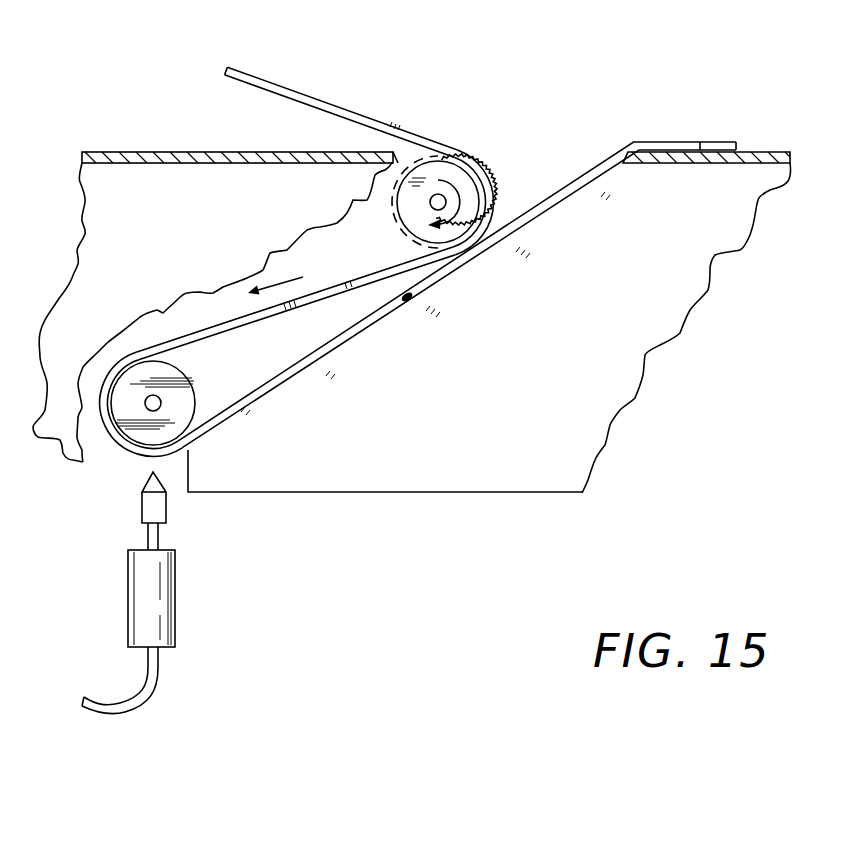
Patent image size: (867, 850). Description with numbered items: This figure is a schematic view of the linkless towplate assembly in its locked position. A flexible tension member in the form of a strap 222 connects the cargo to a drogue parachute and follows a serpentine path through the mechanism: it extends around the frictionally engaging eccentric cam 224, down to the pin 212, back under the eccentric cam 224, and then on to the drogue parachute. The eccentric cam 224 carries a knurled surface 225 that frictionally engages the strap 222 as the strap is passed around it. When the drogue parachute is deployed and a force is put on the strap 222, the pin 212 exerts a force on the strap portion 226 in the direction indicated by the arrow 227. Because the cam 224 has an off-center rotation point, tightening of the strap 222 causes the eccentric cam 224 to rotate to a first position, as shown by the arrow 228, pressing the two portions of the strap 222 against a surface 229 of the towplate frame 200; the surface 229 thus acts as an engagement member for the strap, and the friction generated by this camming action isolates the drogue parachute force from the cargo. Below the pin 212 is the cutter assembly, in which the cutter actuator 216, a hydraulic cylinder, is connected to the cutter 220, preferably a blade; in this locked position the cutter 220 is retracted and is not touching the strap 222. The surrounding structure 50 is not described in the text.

The frame/housing with hatched plates 50 is at (200, 148).
The strap 222 is at (283, 88).
The frictionally engaging eccentric cam 224 is at (397, 191).
The knurled surface 225 is at (420, 172).
The arrow 228 is at (492, 192).
The arrow 227 is at (301, 268).
The strap portion 226 is at (205, 335).
The surface 229 is at (410, 296).
The towplate frame 200 is at (328, 355).
The pin 212 is at (198, 406).
The cutter 220 is at (142, 505).
The cutter actuator 216 is at (176, 592).